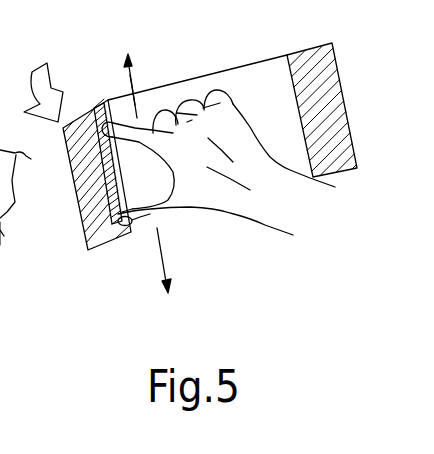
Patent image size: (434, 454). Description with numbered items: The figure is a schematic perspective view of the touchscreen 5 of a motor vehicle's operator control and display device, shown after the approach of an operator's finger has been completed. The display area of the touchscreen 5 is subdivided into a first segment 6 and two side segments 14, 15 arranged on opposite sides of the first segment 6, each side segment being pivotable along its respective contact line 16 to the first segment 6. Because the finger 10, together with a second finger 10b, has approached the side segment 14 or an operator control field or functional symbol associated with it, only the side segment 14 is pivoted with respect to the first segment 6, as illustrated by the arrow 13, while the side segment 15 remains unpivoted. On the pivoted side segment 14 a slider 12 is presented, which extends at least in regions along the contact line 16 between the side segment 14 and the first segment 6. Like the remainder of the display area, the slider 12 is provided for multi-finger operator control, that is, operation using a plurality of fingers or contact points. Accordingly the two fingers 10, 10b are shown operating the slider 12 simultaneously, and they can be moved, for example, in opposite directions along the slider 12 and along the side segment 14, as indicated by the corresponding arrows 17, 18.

The touchscreen 5 is at (178, 126).
The first segment 6 is at (242, 85).
The finger 10 is at (115, 110).
The finger 10b is at (140, 226).
The slider 12 is at (102, 116).
The arrow 13 is at (36, 78).
The side segment 14 is at (84, 227).
The side segment 15 is at (309, 58).
The contact line 16 is at (126, 172).
The arrow 17 is at (134, 77).
The arrow 18 is at (157, 267).